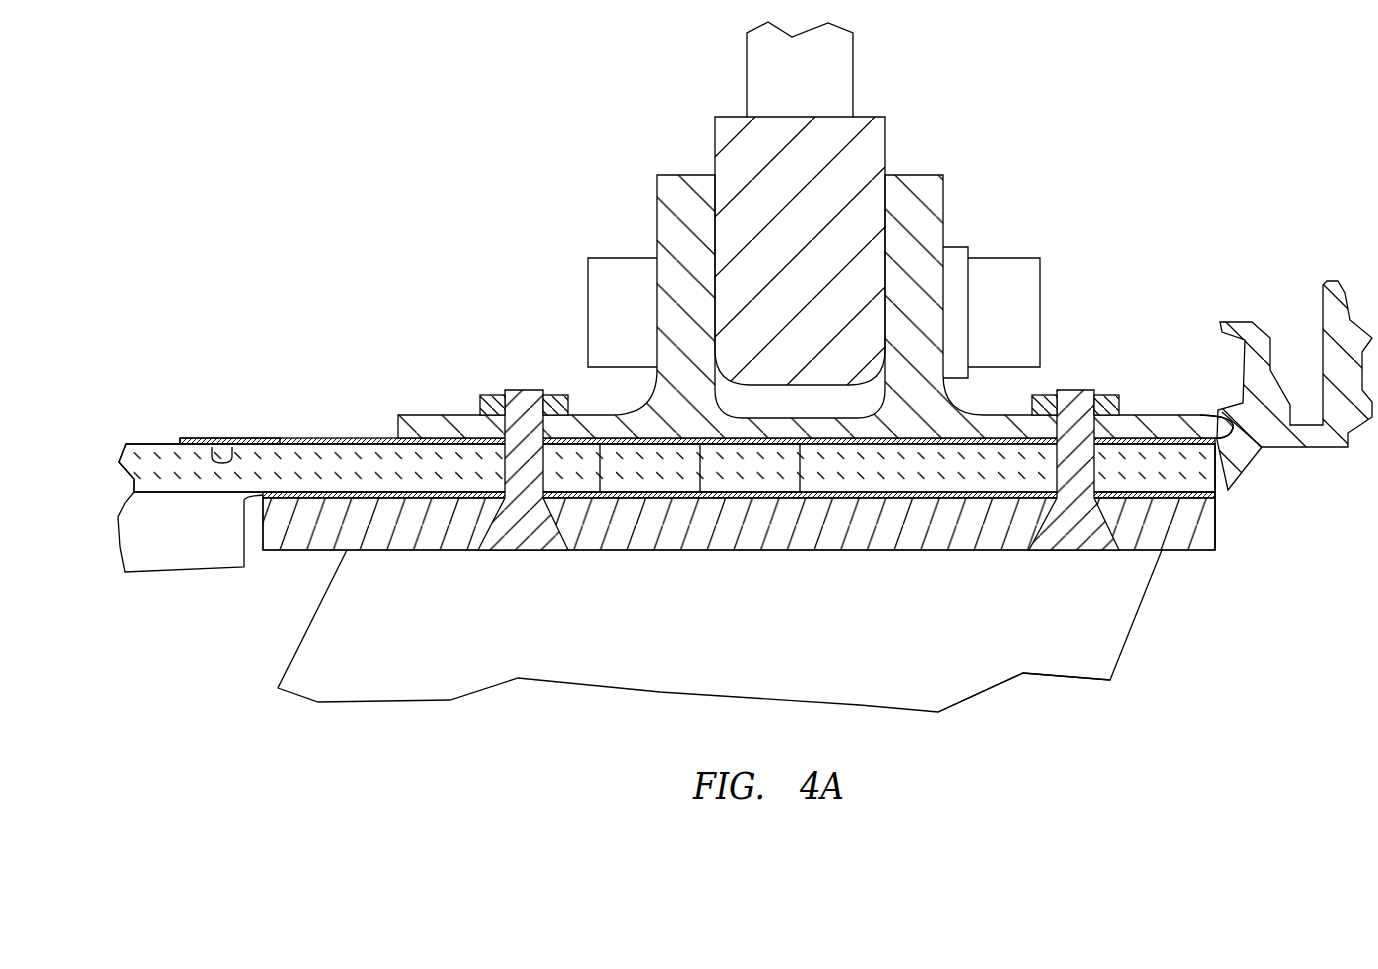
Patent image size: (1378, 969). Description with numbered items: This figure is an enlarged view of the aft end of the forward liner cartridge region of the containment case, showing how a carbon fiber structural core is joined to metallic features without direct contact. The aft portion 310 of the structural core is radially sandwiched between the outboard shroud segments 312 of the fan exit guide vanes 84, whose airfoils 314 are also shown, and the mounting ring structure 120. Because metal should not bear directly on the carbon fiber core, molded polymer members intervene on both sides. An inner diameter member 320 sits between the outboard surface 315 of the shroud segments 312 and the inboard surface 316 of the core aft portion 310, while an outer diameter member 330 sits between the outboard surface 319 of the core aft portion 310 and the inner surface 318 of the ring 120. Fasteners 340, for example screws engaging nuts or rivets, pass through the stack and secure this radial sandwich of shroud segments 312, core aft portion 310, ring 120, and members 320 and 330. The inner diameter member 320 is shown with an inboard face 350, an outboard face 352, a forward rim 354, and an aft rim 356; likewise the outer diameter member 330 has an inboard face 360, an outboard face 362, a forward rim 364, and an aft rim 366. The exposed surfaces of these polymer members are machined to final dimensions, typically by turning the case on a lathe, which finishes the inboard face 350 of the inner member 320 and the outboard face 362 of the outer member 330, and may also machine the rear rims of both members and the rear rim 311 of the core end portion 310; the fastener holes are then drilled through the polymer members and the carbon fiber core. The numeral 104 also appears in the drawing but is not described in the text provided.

The fan exit guide vanes 84 is at (1078, 637).
The panel assembly 104 is at (1245, 513).
The mounting ring structure 120 is at (1258, 279).
The aft portion of the structural core 310 is at (965, 475).
The rear end/rim of the structural core end portion 311 is at (1217, 470).
The outboard shroud segments 312 is at (885, 535).
The airfoils 314 is at (993, 658).
The outboard/OD surface of the shroud segments 315 is at (343, 448).
The inboard/ID surface of the structural core aft portion 316 is at (778, 495).
The inner/ID surface of the ring 318 is at (703, 445).
The outboard/OD surface of the structural core aft portion 319 is at (455, 440).
The inner diameter member 320 is at (297, 505).
The outer diameter member 330 is at (283, 440).
The fasteners 340 is at (1108, 370).
The inboard/ID surface of the inner diameter member 350 is at (410, 500).
The outboard/OD surface of the inner diameter member 352 is at (405, 448).
The forward rim of the inner diameter member 354 is at (244, 505).
The aft rim of the inner diameter member 356 is at (1217, 497).
The inboard/ID surface of the outer diameter member 360 is at (232, 450).
The outboard/OD surface of the outer diameter member 362 is at (205, 438).
The forward rim of the outer diameter member 364 is at (181, 446).
The aft rim of the outer diameter member 366 is at (1232, 418).